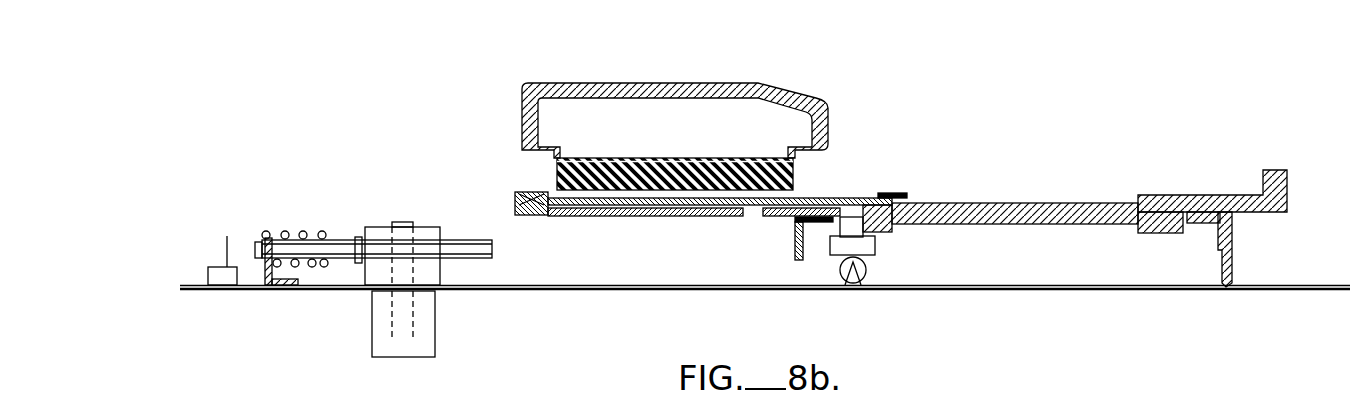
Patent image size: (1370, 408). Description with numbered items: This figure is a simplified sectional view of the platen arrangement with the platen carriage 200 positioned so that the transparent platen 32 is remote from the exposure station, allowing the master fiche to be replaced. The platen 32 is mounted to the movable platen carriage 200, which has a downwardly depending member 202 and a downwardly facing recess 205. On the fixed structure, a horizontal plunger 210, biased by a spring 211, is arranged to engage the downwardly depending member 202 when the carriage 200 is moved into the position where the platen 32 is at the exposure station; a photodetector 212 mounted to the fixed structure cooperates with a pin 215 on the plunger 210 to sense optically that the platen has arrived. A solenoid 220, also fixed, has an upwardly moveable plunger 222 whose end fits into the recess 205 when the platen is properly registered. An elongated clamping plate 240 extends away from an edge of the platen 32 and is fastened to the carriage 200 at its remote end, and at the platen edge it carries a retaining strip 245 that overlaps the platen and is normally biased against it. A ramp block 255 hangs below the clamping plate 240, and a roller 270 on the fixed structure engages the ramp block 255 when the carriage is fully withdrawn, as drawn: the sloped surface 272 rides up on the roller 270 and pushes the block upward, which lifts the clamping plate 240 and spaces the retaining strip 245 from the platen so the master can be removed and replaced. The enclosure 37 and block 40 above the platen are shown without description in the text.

The cover housing 37 is at (631, 83).
The heating block 40 is at (630, 160).
The clamping plate 240 is at (820, 198).
The retaining strip 245 is at (897, 195).
The transparent platen 32 is at (994, 203).
The platen carriage 200 is at (563, 217).
The downwardly facing recess 205 is at (748, 217).
The downwardly depending member 202 is at (795, 240).
The roller 270 is at (840, 264).
The ramp block 255 is at (870, 244).
The sloped surface 272 is at (867, 248).
The photodetector 212 is at (208, 276).
The pin 215 is at (258, 240).
The plunger 210 is at (472, 238).
The spring 211 is at (305, 234).
The upwardly moveable plunger 222 is at (400, 222).
The solenoid 220 is at (432, 327).